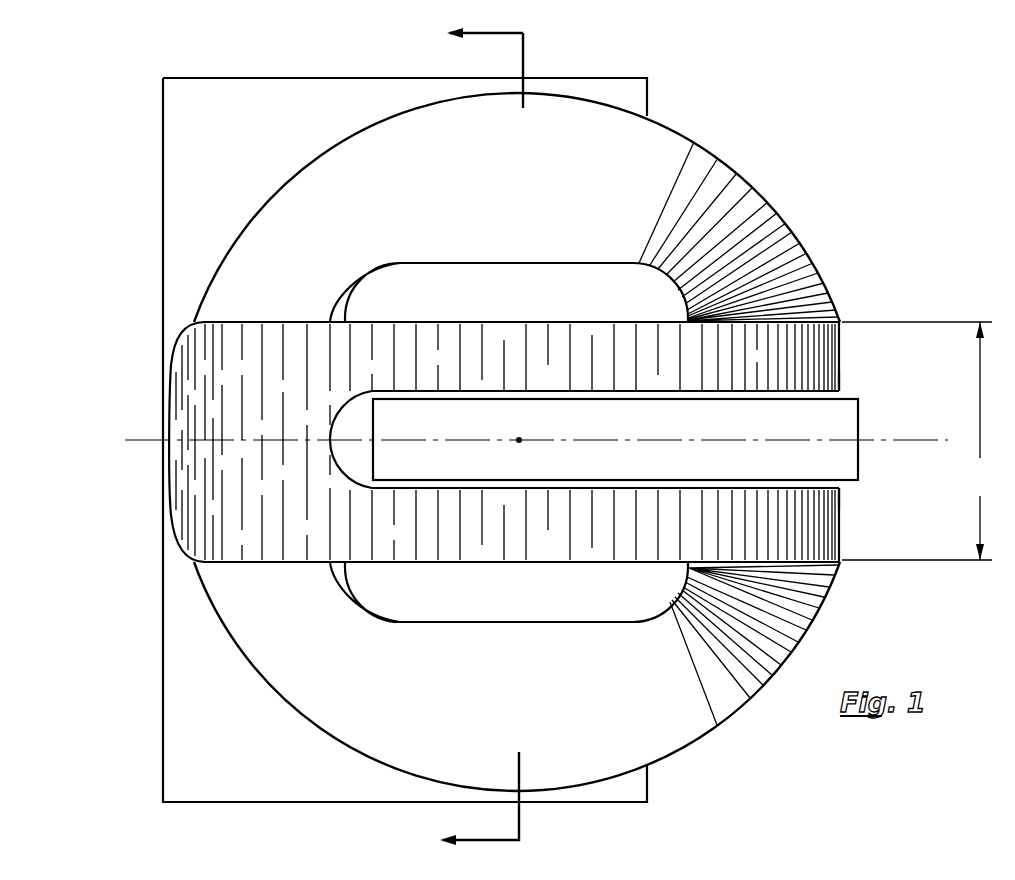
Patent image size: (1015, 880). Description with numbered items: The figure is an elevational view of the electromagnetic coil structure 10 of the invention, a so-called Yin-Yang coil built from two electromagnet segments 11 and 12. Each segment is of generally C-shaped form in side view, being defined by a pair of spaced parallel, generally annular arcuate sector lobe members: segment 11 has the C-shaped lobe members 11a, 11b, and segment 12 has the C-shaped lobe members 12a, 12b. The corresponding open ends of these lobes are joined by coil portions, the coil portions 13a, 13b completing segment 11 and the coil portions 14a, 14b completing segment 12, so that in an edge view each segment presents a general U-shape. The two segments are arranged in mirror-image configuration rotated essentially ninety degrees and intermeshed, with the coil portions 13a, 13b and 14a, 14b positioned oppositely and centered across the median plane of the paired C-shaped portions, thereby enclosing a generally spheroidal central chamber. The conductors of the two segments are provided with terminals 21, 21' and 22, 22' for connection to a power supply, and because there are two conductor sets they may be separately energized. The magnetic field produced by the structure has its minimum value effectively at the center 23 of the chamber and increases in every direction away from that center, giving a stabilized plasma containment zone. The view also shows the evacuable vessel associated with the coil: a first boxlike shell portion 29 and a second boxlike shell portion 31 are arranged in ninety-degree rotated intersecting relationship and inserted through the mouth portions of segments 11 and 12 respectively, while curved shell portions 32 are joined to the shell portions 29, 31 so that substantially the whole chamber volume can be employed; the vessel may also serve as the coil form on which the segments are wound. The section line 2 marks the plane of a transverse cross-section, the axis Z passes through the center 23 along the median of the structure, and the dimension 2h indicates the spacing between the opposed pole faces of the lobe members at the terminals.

The electromagnetic coil structure 10 is at (150, 684).
The electromagnet segment 11 is at (841, 349).
The C-shaped lobe member 11a is at (796, 370).
The C-shaped lobe member 11b is at (799, 534).
The electromagnet segment 12 is at (803, 248).
The C-shaped lobe member 12a is at (644, 194).
The C-shaped lobe member 12b is at (714, 101).
The coil portion 13a is at (302, 422).
The coil portion 13b is at (120, 388).
The coil portion 14a is at (780, 302).
The coil portion 14b is at (782, 620).
The terminal 21 is at (873, 384).
The terminal 21' is at (875, 494).
The terminal 22 is at (156, 269).
The terminal 22' is at (150, 599).
The center 23 is at (519, 440).
The boxlike shell portion 29 is at (858, 433).
The boxlike shell portion 31 is at (258, 78).
The curved shell portion 32 is at (448, 312).
The section line 2- 2 is at (471, 437).
The axis Z- Z is at (140, 432).
The pole spacing dimension 2h is at (919, 441).